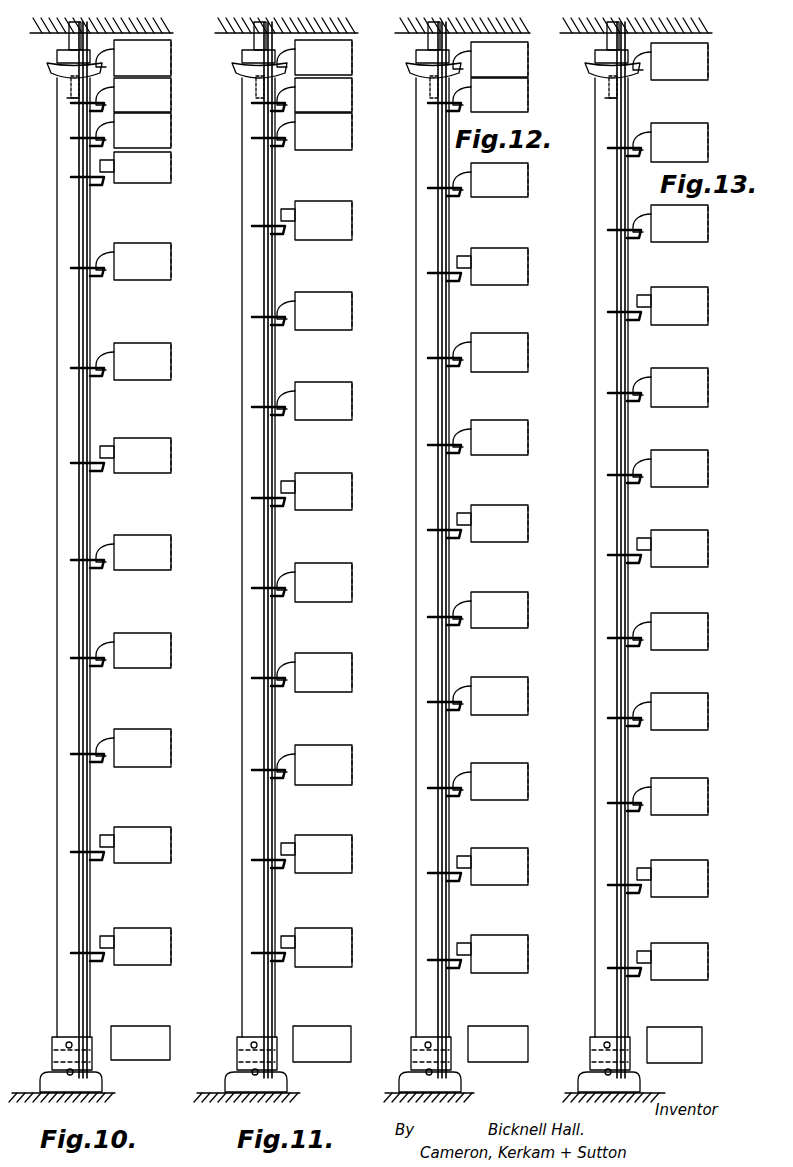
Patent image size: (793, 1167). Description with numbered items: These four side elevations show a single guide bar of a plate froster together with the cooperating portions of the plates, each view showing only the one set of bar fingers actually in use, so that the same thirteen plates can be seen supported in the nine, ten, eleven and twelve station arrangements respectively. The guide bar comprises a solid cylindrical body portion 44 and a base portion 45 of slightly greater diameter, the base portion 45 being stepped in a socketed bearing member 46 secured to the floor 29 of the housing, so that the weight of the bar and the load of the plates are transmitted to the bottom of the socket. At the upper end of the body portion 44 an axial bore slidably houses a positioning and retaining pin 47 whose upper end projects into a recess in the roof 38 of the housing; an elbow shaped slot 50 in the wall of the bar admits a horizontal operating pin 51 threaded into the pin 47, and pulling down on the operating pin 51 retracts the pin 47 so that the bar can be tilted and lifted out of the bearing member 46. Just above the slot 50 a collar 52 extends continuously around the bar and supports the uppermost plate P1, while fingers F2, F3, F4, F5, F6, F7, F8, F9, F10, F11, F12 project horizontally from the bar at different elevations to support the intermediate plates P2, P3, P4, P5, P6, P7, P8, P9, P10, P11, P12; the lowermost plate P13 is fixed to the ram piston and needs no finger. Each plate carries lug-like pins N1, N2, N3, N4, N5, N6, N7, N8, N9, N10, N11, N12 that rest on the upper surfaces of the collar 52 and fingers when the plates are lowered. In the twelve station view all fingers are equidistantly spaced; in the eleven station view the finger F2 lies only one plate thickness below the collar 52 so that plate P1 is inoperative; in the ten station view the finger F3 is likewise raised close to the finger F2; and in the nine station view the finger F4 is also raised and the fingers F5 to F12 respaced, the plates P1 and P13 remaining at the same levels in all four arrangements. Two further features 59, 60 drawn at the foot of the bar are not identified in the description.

In FIG. 10, the plate pin N1 is at (133, 58).
In FIG. 11, the plate pin N1 is at (314, 57).
In FIG. 12, the plate pin N1 is at (490, 59).
In FIG. 13, the plate pin N1 is at (670, 61).
In FIG. 10, the plate pin N2 is at (133, 95).
In FIG. 11, the plate pin N2 is at (314, 95).
In FIG. 12, the plate pin N2 is at (490, 95).
In FIG. 13, the plate pin N2 is at (670, 142).
In FIG. 10, the plate pin N3 is at (133, 130).
In FIG. 11, the plate pin N3 is at (314, 131).
In FIG. 12, the plate pin N3 is at (490, 180).
In FIG. 13, the plate pin N3 is at (670, 223).
In FIG. 10, the plate pin N4 is at (135, 167).
In FIG. 11, the plate pin N4 is at (316, 220).
In FIG. 12, the plate pin N4 is at (492, 266).
In FIG. 13, the plate pin N4 is at (672, 306).
In FIG. 10, the plate pin N5 is at (133, 261).
In FIG. 11, the plate pin N5 is at (314, 311).
In FIG. 12, the plate pin N5 is at (490, 352).
In FIG. 13, the plate pin N5 is at (670, 387).
In FIG. 10, the plate pin N6 is at (133, 361).
In FIG. 11, the plate pin N6 is at (314, 401).
In FIG. 12, the plate pin N6 is at (490, 437).
In FIG. 13, the plate pin N6 is at (670, 468).
In FIG. 10, the plate pin N7 is at (135, 455).
In FIG. 11, the plate pin N7 is at (316, 491).
In FIG. 12, the plate pin N7 is at (492, 523).
In FIG. 13, the plate pin N7 is at (672, 548).
In FIG. 10, the plate pin N8 is at (133, 552).
In FIG. 11, the plate pin N8 is at (314, 582).
In FIG. 12, the plate pin N8 is at (490, 610).
In FIG. 13, the plate pin N8 is at (670, 631).
In FIG. 10, the plate pin N9 is at (133, 650).
In FIG. 11, the plate pin N9 is at (314, 672).
In FIG. 12, the plate pin N9 is at (490, 696).
In FIG. 13, the plate pin N9 is at (670, 711).
In FIG. 10, the plate pin N10 is at (133, 748).
In FIG. 11, the plate pin N10 is at (314, 765).
In FIG. 12, the plate pin N10 is at (490, 781).
In FIG. 13, the plate pin N10 is at (670, 796).
In FIG. 10, the plate pin N11 is at (135, 845).
In FIG. 11, the plate pin N11 is at (316, 854).
In FIG. 12, the plate pin N11 is at (492, 866).
In FIG. 13, the plate pin N11 is at (672, 878).
In FIG. 10, the plate pin N12 is at (135, 946).
In FIG. 11, the plate pin N12 is at (316, 947).
In FIG. 12, the plate pin N12 is at (492, 954).
In FIG. 13, the plate pin N12 is at (672, 961).
In FIG. 10, the uppermost plate P1 is at (180, 64).
In FIG. 11, the uppermost plate P1 is at (361, 63).
In FIG. 12, the uppermost plate P1 is at (537, 65).
In FIG. 13, the uppermost plate P1 is at (717, 67).
In FIG. 10, the plate P2 is at (180, 101).
In FIG. 11, the plate P2 is at (361, 101).
In FIG. 12, the plate P2 is at (537, 101).
In FIG. 13, the plate P2 is at (717, 148).
In FIG. 10, the plate P3 is at (180, 136).
In FIG. 11, the plate P3 is at (361, 137).
In FIG. 12, the plate P3 is at (537, 186).
In FIG. 13, the plate P3 is at (717, 229).
In FIG. 10, the plate P4 is at (180, 173).
In FIG. 11, the plate P4 is at (361, 226).
In FIG. 12, the plate P4 is at (537, 272).
In FIG. 13, the plate P4 is at (717, 312).
In FIG. 10, the plate P5 is at (180, 267).
In FIG. 11, the plate P5 is at (361, 317).
In FIG. 12, the plate P5 is at (537, 358).
In FIG. 13, the plate P5 is at (717, 393).
In FIG. 10, the plate P6 is at (180, 367).
In FIG. 11, the plate P6 is at (361, 407).
In FIG. 12, the plate P6 is at (537, 443).
In FIG. 13, the plate P6 is at (717, 474).
In FIG. 10, the plate P7 is at (180, 461).
In FIG. 11, the plate P7 is at (361, 497).
In FIG. 12, the plate P7 is at (537, 529).
In FIG. 13, the plate P7 is at (717, 554).
In FIG. 10, the plate P8 is at (180, 558).
In FIG. 11, the plate P8 is at (361, 588).
In FIG. 12, the plate P8 is at (537, 616).
In FIG. 13, the plate P8 is at (717, 637).
In FIG. 10, the plate P9 is at (180, 656).
In FIG. 11, the plate P9 is at (361, 678).
In FIG. 12, the plate P9 is at (537, 702).
In FIG. 13, the plate P9 is at (717, 717).
In FIG. 10, the plate P10 is at (185, 754).
In FIG. 11, the plate P10 is at (366, 771).
In FIG. 12, the plate P10 is at (542, 787).
In FIG. 13, the plate P10 is at (722, 802).
In FIG. 10, the plate P11 is at (185, 851).
In FIG. 11, the plate P11 is at (366, 860).
In FIG. 12, the plate P11 is at (542, 872).
In FIG. 13, the plate P11 is at (722, 884).
In FIG. 10, the plate P12 is at (185, 952).
In FIG. 11, the plate P12 is at (366, 953).
In FIG. 12, the plate P12 is at (542, 960).
In FIG. 13, the plate P12 is at (722, 967).
In FIG. 10, the lowermost plate P13 is at (139, 1048).
In FIG. 11, the lowermost plate P13 is at (305, 1048).
In FIG. 12, the lowermost plate P13 is at (482, 1048).
In FIG. 13, the lowermost plate P13 is at (683, 1055).
In FIG. 10, the finger F2 is at (64, 110).
In FIG. 11, the finger F2 is at (245, 110).
In FIG. 12, the finger F2 is at (421, 110).
In FIG. 13, the finger F2 is at (601, 158).
In FIG. 10, the finger F3 is at (64, 146).
In FIG. 11, the finger F3 is at (245, 147).
In FIG. 12, the finger F3 is at (421, 195).
In FIG. 13, the finger F3 is at (601, 239).
In FIG. 10, the finger F4 is at (64, 181).
In FIG. 11, the finger F4 is at (245, 236).
In FIG. 12, the finger F4 is at (421, 282).
In FIG. 13, the finger F4 is at (601, 322).
In FIG. 10, the finger F5 is at (64, 277).
In FIG. 11, the finger F5 is at (245, 327).
In FIG. 12, the finger F5 is at (421, 368).
In FIG. 13, the finger F5 is at (601, 403).
In FIG. 10, the finger F6 is at (64, 377).
In FIG. 11, the finger F6 is at (245, 417).
In FIG. 12, the finger F6 is at (421, 453).
In FIG. 13, the finger F6 is at (601, 484).
In FIG. 10, the finger F7 is at (64, 471).
In FIG. 11, the finger F7 is at (245, 507).
In FIG. 12, the finger F7 is at (421, 539).
In FIG. 13, the finger F7 is at (601, 564).
In FIG. 10, the finger F8 is at (64, 568).
In FIG. 11, the finger F8 is at (245, 598).
In FIG. 12, the finger F8 is at (421, 626).
In FIG. 13, the finger F8 is at (601, 647).
In FIG. 10, the finger F9 is at (64, 666).
In FIG. 11, the finger F9 is at (245, 688).
In FIG. 12, the finger F9 is at (421, 712).
In FIG. 13, the finger F9 is at (601, 727).
In FIG. 10, the finger F10 is at (64, 764).
In FIG. 11, the finger F10 is at (245, 781).
In FIG. 12, the finger F10 is at (421, 797).
In FIG. 13, the finger F10 is at (601, 812).
In FIG. 10, the finger F11 is at (64, 861).
In FIG. 11, the finger F11 is at (245, 870).
In FIG. 12, the finger F11 is at (421, 882).
In FIG. 13, the finger F11 is at (601, 894).
In FIG. 10, the finger F12 is at (64, 962).
In FIG. 11, the finger F12 is at (245, 963).
In FIG. 12, the finger F12 is at (421, 970).
In FIG. 13, the finger F12 is at (601, 977).
In FIG. 11, the roof 38 is at (269, 21).
In FIG. 12, the roof 38 is at (478, 21).
In FIG. 10, the positioning and retaining pin 47 is at (16, 40).
In FIG. 11, the positioning and retaining pin 47 is at (230, 39).
In FIG. 12, the positioning and retaining pin 47 is at (405, 38).
In FIG. 13, the positioning and retaining pin 47 is at (583, 39).
In FIG. 10, the collar 52 is at (8, 72).
In FIG. 11, the collar 52 is at (239, 64).
In FIG. 12, the collar 52 is at (418, 64).
In FIG. 13, the collar 52 is at (593, 64).
In FIG. 10, the operating pin 51 is at (12, 80).
In FIG. 11, the operating pin 51 is at (228, 87).
In FIG. 12, the operating pin 51 is at (411, 87).
In FIG. 13, the operating pin 51 is at (587, 87).
In FIG. 10, the elbow shaped slot 50 is at (12, 96).
In FIG. 13, the elbow shaped slot 50 is at (584, 116).
In FIG. 10, the body portion 44 is at (3, 986).
In FIG. 11, the body portion 44 is at (237, 557).
In FIG. 12, the body portion 44 is at (411, 557).
In FIG. 13, the body portion 44 is at (589, 557).
In FIG. 10, the base portion 45 is at (100, 550).
In FIG. 11, the base portion 45 is at (285, 550).
In FIG. 12, the base portion 45 is at (459, 550).
In FIG. 13, the base portion 45 is at (638, 550).
In FIG. 10, the collar 60 is at (9, 1044).
In FIG. 11, the collar 60 is at (238, 1048).
In FIG. 12, the collar 60 is at (412, 1048).
In FIG. 13, the collar 60 is at (591, 1048).
In FIG. 10, the pin 59 is at (10, 1071).
In FIG. 11, the pin 59 is at (229, 1061).
In FIG. 12, the pin 59 is at (403, 1061).
In FIG. 13, the pin 59 is at (582, 1061).
In FIG. 10, the socketed bearing member 46 is at (2, 1089).
In FIG. 11, the socketed bearing member 46 is at (240, 1081).
In FIG. 12, the socketed bearing member 46 is at (414, 1081).
In FIG. 13, the socketed bearing member 46 is at (593, 1081).
In FIG. 10, the floor 29 is at (53, 1093).
In FIG. 11, the floor 29 is at (289, 1095).
In FIG. 13, the floor 29 is at (585, 1094).